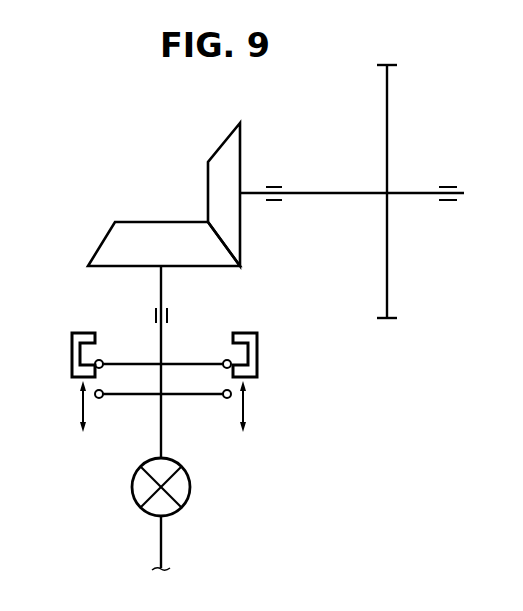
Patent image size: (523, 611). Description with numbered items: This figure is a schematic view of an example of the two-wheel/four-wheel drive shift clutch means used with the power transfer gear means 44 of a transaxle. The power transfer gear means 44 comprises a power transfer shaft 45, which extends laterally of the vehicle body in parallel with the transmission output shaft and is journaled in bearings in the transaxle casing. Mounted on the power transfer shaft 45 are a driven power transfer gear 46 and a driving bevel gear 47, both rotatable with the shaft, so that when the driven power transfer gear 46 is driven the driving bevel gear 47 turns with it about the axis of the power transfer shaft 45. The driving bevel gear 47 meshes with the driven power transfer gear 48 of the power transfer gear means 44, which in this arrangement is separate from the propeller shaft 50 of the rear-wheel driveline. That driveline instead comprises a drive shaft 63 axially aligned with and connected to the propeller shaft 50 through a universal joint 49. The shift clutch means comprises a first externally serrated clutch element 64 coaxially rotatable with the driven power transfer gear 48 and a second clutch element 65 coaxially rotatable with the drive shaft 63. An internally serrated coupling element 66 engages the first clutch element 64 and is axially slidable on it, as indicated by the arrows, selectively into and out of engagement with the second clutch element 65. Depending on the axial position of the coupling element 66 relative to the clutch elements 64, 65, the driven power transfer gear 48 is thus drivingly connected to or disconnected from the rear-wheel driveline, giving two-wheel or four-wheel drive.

The power transfer gear means 44 is at (331, 361).
The power transfer shaft 45 is at (329, 191).
The driven power transfer gear 46 is at (388, 123).
The driving bevel gear 47 is at (227, 142).
The driven power transfer gear 48 is at (167, 220).
The universal joint 49 is at (135, 498).
The propeller shaft 50 is at (163, 545).
The drive shaft 63 is at (162, 430).
The first externally serrated clutch element 64 is at (200, 362).
The second clutch element 65 is at (131, 396).
The internally serrated coupling element 66 is at (72, 341).